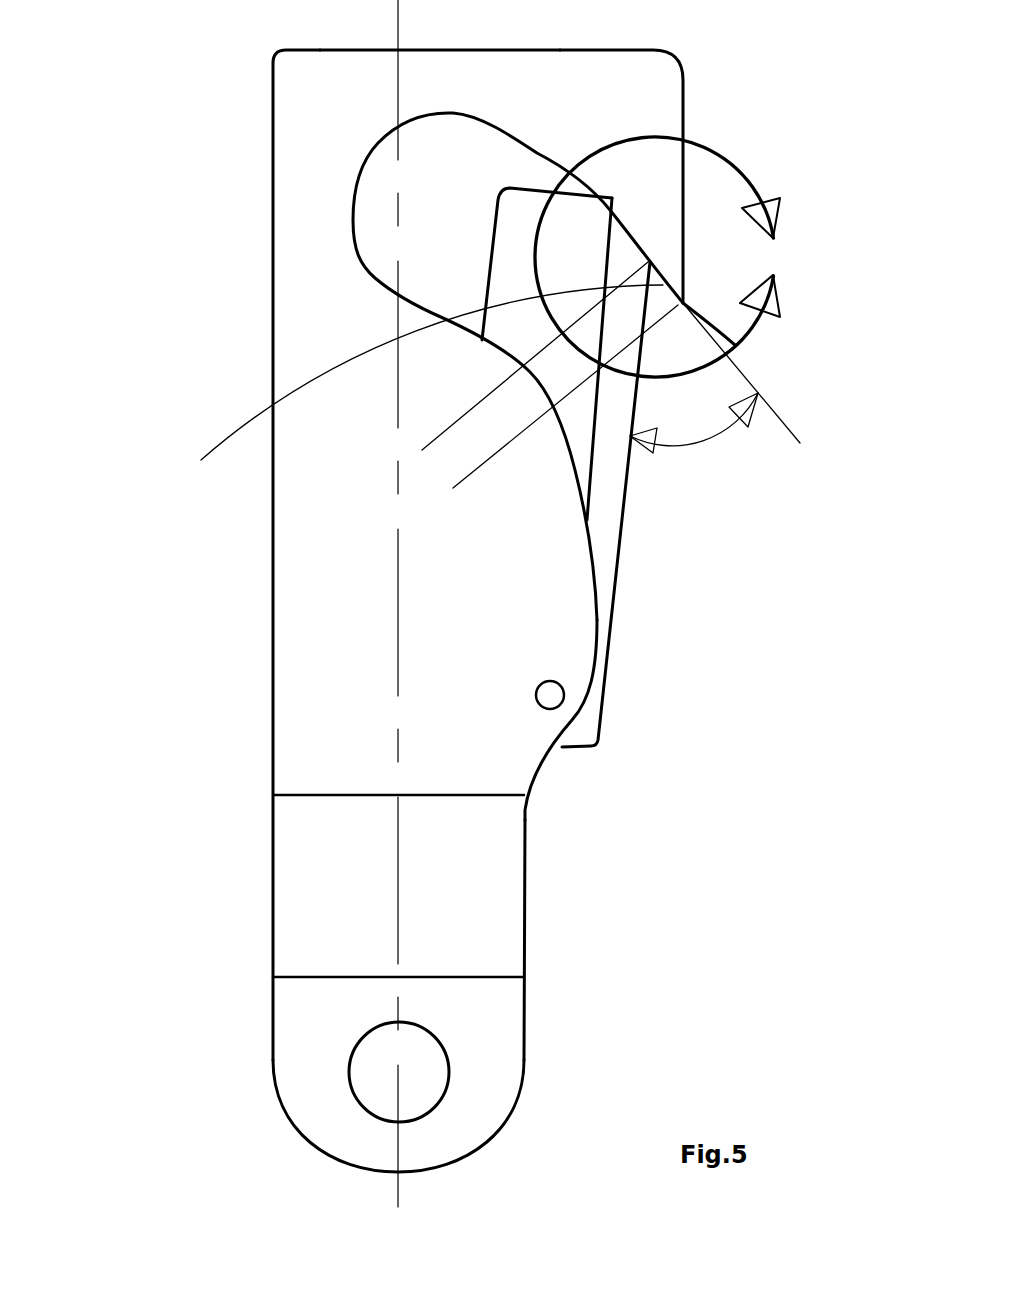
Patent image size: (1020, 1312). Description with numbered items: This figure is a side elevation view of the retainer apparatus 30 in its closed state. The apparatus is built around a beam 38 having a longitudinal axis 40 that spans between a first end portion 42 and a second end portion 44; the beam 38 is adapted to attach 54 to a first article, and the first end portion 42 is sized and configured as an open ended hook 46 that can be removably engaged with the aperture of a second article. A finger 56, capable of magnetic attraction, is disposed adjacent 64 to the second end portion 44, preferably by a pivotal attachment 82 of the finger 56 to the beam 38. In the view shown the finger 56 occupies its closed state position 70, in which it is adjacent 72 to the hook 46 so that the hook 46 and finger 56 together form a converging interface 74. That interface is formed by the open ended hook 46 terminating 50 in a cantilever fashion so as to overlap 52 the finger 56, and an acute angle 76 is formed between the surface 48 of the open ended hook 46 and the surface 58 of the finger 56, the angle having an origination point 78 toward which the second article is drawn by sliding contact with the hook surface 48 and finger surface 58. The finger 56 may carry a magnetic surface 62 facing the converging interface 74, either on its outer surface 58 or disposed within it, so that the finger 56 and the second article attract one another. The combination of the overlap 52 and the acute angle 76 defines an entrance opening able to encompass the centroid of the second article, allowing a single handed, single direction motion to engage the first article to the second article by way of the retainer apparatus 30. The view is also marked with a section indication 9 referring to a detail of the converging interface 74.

The retainer apparatus 30 is at (230, 143).
The beam 38 is at (270, 742).
The longitudinal axis 40 is at (398, 36).
The first end portion 42 is at (290, 195).
The second end portion 44 is at (298, 1018).
The open ended hook 46 is at (653, 87).
The surface of the open ended hook 48 is at (513, 128).
The terminating 50 is at (740, 341).
The overlap 52 is at (483, 470).
The attach 54 is at (348, 1073).
The finger 56 is at (513, 213).
The surface of the finger 58 is at (614, 583).
The magnetic surface 62 is at (596, 473).
The adjacent disposing 64 is at (552, 711).
The closed state position 70 is at (737, 165).
The adjacent 72 is at (727, 161).
The converging interface 74 is at (423, 387).
The acute angle 76 is at (702, 441).
The origination point 78 is at (448, 427).
The pivotal attachment 82 is at (563, 700).
The rotation direction 9 is at (760, 257).